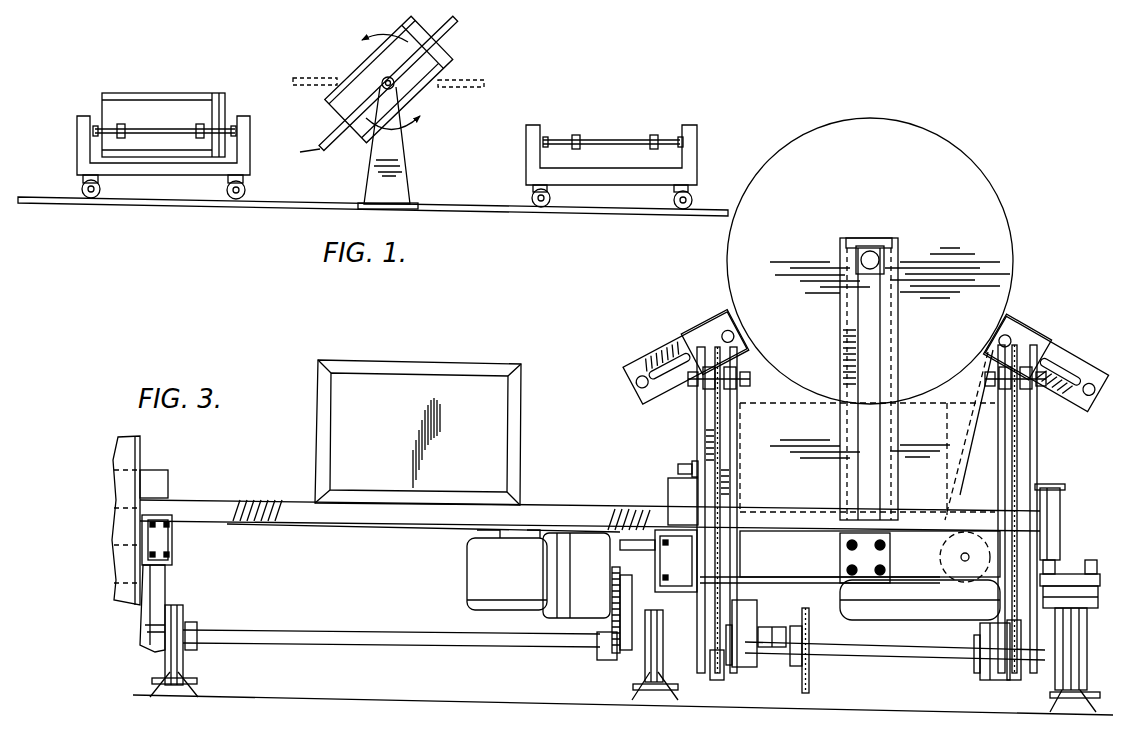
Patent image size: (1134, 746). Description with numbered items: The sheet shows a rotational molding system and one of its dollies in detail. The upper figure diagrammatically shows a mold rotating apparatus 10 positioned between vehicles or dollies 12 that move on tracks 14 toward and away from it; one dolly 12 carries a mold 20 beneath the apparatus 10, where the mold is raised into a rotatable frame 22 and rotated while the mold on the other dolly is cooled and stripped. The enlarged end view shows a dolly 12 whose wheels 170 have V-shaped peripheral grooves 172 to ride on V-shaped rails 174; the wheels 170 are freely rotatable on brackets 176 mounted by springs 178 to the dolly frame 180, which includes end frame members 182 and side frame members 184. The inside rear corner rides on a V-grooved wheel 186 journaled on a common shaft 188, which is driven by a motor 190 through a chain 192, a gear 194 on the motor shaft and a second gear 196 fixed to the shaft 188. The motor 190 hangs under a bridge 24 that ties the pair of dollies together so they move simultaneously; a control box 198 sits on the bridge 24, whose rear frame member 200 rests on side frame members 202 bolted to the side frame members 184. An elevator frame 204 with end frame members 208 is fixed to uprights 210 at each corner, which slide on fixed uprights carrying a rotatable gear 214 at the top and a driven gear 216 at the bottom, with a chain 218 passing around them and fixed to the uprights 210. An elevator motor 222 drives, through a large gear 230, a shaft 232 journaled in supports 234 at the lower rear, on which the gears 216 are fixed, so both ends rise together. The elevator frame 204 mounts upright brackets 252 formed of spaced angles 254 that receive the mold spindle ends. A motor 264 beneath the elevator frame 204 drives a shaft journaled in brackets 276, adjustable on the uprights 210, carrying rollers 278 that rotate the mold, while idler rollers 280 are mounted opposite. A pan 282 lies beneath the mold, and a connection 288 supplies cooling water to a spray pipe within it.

In FIG. 1, the mold rotating apparatus 10 is at (463, 62).
In FIG. 1, the dolly 12 is at (268, 95).
In FIG. 3, the dolly 12 is at (147, 460).
In FIG. 1, the tracks 14 is at (286, 208).
In FIG. 3, the mold 20 is at (953, 146).
In FIG. 1, the frame 22 is at (298, 152).
In FIG. 3, the bridge 24 is at (284, 500).
In FIG. 3, the wheels 170 is at (1060, 684).
In FIG. 3, the V-shaped peripheral grooves 172 is at (1070, 681).
In FIG. 3, the V-shaped rails 174 is at (1056, 694).
In FIG. 3, the brackets 176 is at (1063, 592).
In FIG. 3, the springs 178 is at (1060, 580).
In FIG. 3, the dolly frame 180 is at (1050, 540).
In FIG. 3, the end frame members 182 is at (780, 567).
In FIG. 3, the side frame members 184 is at (166, 568).
In FIG. 3, the wheel 186 is at (186, 671).
In FIG. 3, the shaft 188 is at (413, 644).
In FIG. 3, the motor 190 is at (478, 580).
In FIG. 3, the chain 192 is at (628, 613).
In FIG. 3, the gear 194 is at (650, 570).
In FIG. 3, the second gear 196 is at (612, 666).
In FIG. 3, the control box 198 is at (426, 363).
In FIG. 3, the rear frame member 200 is at (563, 512).
In FIG. 3, the side frame members 202 is at (173, 538).
In FIG. 3, the elevator frame 204 is at (1041, 487).
In FIG. 3, the end frame members 208 is at (671, 488).
In FIG. 3, the uprights 210 is at (738, 441).
In FIG. 3, the rotatable gear 214 is at (705, 343).
In FIG. 3, the driven gear 216 is at (713, 667).
In FIG. 3, the chain 218 is at (713, 540).
In FIG. 3, the elevator motor 222 is at (753, 622).
In FIG. 3, the large gear 230 is at (810, 681).
In FIG. 3, the shaft 232 is at (878, 656).
In FIG. 3, the supports 234 is at (741, 665).
In FIG. 3, the upright brackets 252 is at (900, 420).
In FIG. 3, the angles 254 is at (858, 320).
In FIG. 3, the motor 264 is at (913, 614).
In FIG. 3, the bracket 276 is at (632, 366).
In FIG. 3, the rollers 278 is at (1010, 320).
In FIG. 3, the idler rollers 280 is at (719, 313).
In FIG. 3, the pan 282 is at (803, 412).
In FIG. 3, the connection 288 is at (677, 464).